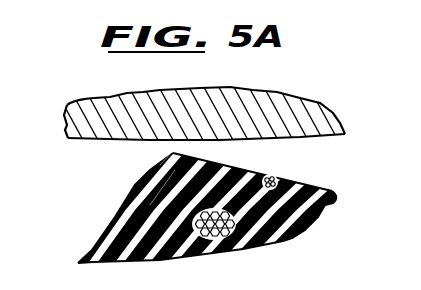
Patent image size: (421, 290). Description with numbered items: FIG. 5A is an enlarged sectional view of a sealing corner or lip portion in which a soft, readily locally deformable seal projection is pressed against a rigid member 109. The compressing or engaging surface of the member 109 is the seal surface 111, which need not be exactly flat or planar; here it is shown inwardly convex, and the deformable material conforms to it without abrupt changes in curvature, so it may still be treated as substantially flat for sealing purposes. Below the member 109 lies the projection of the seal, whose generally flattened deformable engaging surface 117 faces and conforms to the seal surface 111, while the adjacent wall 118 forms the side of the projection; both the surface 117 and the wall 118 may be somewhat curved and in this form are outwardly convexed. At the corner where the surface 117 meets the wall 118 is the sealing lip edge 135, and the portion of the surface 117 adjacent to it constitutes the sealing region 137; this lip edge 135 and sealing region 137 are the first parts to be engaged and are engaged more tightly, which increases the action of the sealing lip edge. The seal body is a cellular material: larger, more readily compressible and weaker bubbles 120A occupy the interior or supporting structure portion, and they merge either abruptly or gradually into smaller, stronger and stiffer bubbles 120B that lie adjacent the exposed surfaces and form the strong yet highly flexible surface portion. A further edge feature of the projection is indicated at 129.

The member 109 is at (348, 90).
The seal surface 111 is at (324, 137).
The deformable engaging surface 117 is at (310, 190).
The edge of striped layer 129 is at (337, 201).
The wall 118 is at (109, 222).
The sealing lip edge 135 is at (168, 154).
The sealing region 137 is at (170, 199).
The larger bubbles 120A is at (250, 238).
The smaller bubbles 120B is at (289, 160).